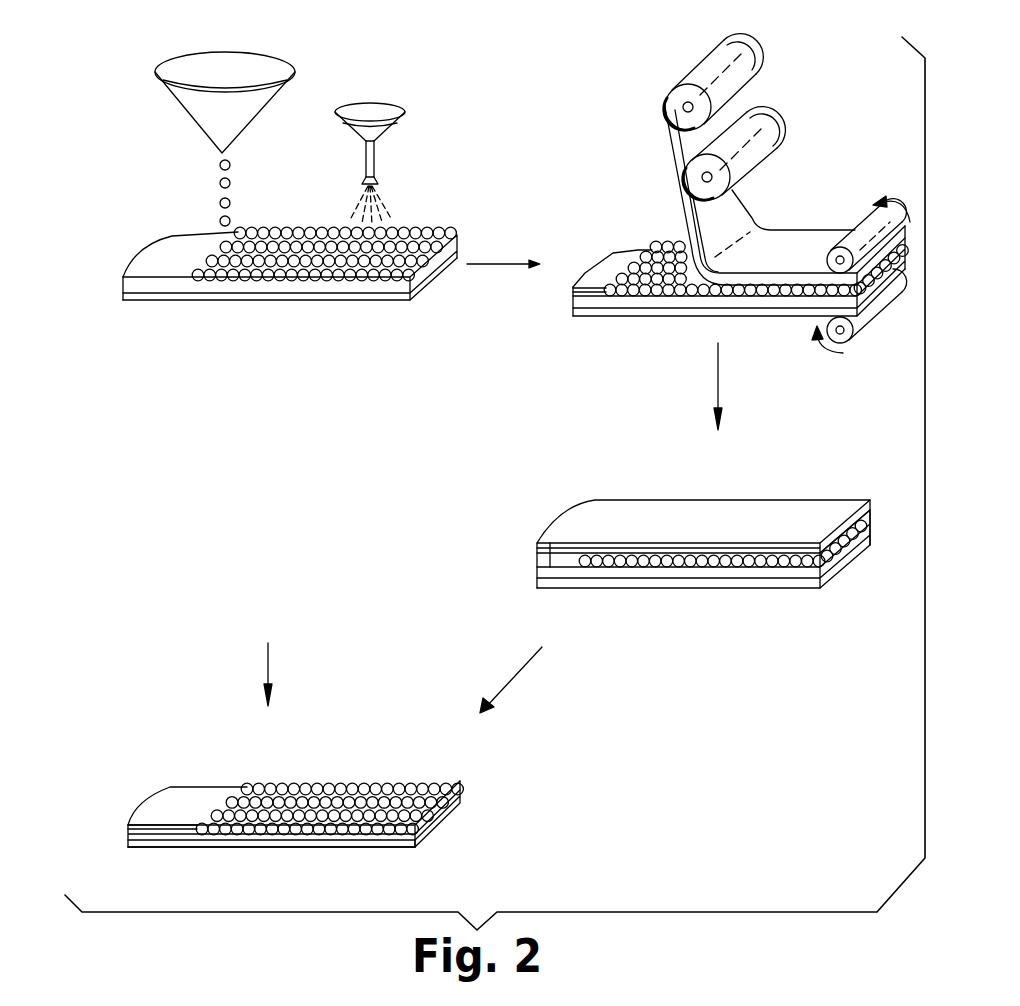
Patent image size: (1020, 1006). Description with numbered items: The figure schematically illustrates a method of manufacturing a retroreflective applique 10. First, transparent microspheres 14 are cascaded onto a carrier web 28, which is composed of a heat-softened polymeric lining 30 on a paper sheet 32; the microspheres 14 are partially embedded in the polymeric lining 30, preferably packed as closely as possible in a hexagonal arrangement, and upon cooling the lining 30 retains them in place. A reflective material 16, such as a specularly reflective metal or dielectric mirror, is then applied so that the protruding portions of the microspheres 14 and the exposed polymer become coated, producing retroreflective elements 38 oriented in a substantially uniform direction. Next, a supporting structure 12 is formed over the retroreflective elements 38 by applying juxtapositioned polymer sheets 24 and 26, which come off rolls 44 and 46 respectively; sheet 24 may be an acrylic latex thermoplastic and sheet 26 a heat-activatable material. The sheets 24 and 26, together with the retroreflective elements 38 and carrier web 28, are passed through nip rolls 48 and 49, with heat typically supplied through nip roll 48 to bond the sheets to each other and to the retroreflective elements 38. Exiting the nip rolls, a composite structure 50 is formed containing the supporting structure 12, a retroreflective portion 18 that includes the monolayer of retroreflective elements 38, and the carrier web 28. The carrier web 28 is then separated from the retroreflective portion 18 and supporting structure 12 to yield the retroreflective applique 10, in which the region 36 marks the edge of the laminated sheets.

The retroreflective applique 10 is at (452, 757).
The supporting structure 12 is at (751, 508).
The transparent microspheres 14 is at (218, 197).
The reflective material 16 is at (387, 205).
The retroreflective portion 18 is at (865, 532).
The polymer sheet 24 is at (688, 150).
The polymer sheet 26 is at (728, 208).
The carrier web 28 is at (114, 280).
The polymeric lining 30 is at (366, 283).
The paper sheet 32 is at (153, 299).
The film edge region 36 is at (548, 547).
The retroreflective elements 38 is at (658, 228).
The roll 44 is at (740, 54).
The roll 46 is at (753, 118).
The nip roll 48 is at (873, 222).
The nip roll 49 is at (890, 295).
The composite structure 50 is at (677, 486).